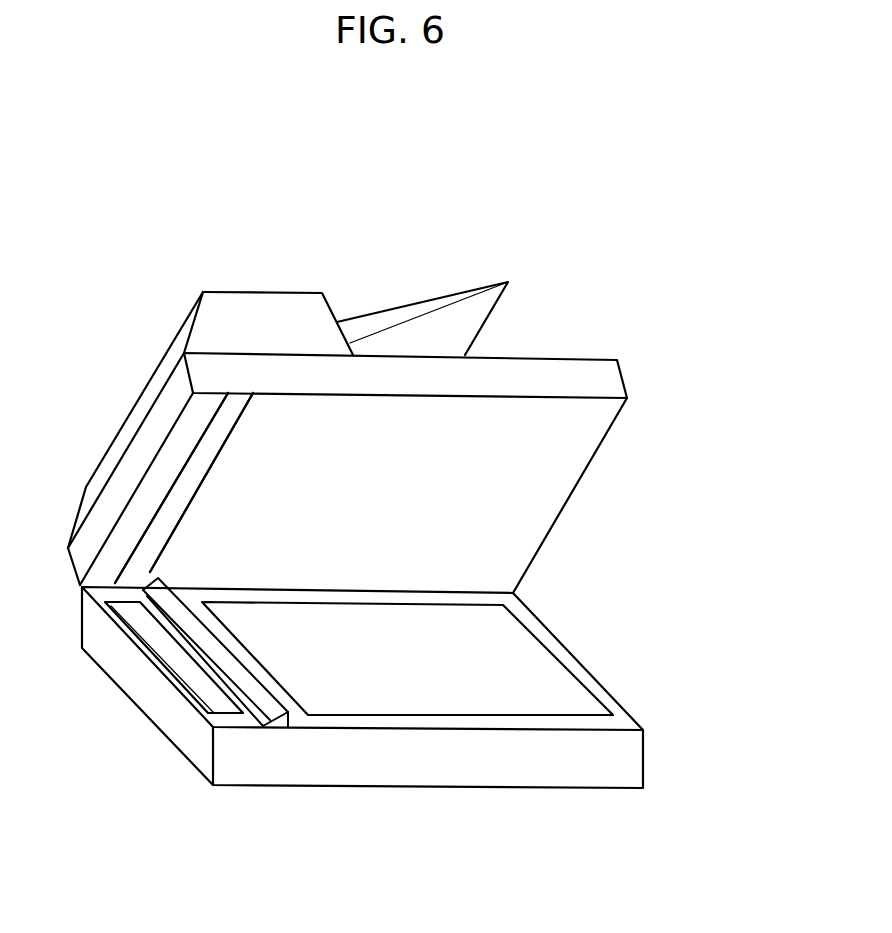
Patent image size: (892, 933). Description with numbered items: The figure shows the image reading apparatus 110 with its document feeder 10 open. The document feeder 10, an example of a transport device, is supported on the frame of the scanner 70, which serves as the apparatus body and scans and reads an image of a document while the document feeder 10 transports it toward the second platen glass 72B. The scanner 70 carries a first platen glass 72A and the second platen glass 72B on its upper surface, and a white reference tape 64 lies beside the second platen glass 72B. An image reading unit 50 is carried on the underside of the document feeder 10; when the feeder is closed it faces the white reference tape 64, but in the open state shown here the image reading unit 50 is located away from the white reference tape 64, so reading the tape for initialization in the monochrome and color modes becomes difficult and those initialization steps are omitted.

The document feeder 10 is at (201, 265).
The image reading apparatus 110 is at (681, 387).
The image reading unit 50 is at (189, 476).
The scanner 70 is at (570, 820).
The first platen glass 72A is at (557, 692).
The second platen glass 72B is at (180, 672).
The white reference tape 64 is at (270, 708).